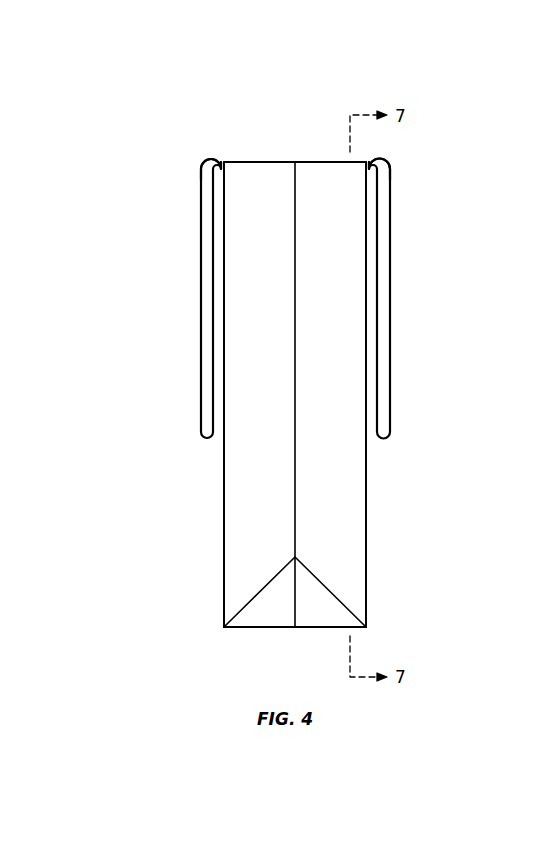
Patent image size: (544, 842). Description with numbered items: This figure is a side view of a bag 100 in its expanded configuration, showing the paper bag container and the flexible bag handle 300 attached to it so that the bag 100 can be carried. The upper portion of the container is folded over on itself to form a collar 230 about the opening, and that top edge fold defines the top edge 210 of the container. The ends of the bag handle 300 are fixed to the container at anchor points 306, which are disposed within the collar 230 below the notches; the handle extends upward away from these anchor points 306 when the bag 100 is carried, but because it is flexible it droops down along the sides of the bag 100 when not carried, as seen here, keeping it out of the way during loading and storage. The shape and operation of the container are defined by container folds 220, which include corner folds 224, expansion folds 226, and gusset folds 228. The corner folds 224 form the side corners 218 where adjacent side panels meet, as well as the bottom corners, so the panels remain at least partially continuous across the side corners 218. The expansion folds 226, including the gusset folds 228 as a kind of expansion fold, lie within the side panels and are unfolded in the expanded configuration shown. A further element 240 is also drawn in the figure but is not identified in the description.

The bag 100 is at (162, 113).
The top edge 210 is at (273, 162).
The collar 230 is at (333, 183).
The anchor points 306 is at (227, 178).
The bag handle 300 is at (207, 302).
The container folds 220 is at (325, 377).
The corner folds 224 is at (448, 470).
The expansion folds 226 is at (295, 457).
The side corners 218 is at (225, 573).
The gusset folds 228 is at (252, 602).
The bottom panel 240 is at (325, 612).